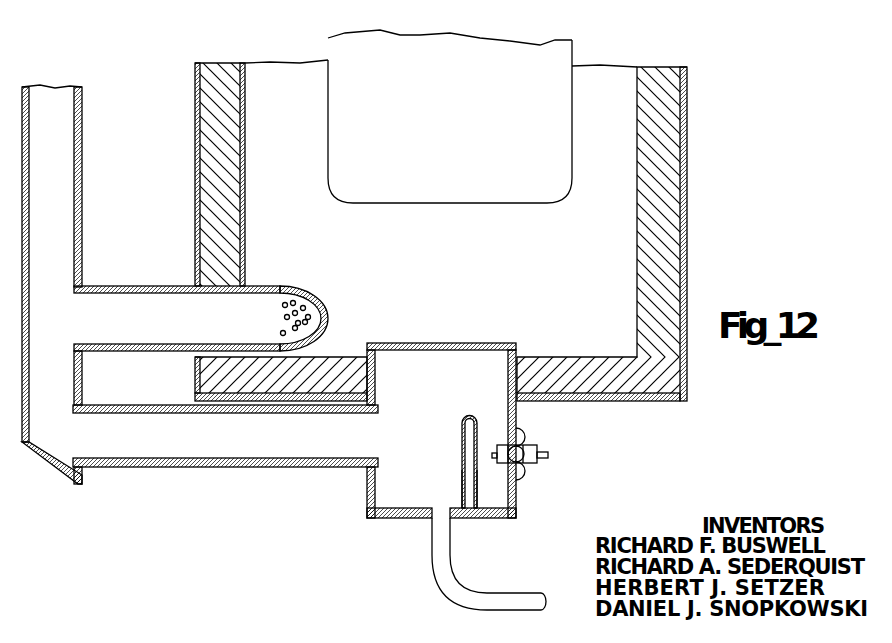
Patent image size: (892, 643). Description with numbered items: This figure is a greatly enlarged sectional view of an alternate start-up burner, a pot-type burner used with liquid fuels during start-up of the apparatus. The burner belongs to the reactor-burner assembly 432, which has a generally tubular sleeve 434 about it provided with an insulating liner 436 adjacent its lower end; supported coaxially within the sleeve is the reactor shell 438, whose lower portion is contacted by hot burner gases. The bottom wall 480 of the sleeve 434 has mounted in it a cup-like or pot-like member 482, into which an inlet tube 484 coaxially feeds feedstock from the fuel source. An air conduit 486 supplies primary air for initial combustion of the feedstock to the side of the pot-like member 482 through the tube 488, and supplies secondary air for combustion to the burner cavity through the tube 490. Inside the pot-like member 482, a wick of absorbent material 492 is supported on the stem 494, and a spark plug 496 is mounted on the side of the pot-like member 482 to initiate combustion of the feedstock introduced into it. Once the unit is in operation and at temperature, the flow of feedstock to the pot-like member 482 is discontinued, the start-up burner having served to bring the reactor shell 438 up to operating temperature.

The reactor-burner assembly 432 is at (492, 204).
The tubular sleeve 434 is at (688, 258).
The insulating liner 436 is at (225, 67).
The reactor shell 438 is at (566, 58).
The bottom wall 480 is at (632, 402).
The pot-like member 482 is at (380, 494).
The inlet tube 484 is at (440, 563).
The air conduit 486 is at (62, 103).
The tube 488 is at (212, 467).
The tube 490 is at (147, 302).
The wick of absorbent material 492 is at (462, 430).
The stem 494 is at (462, 487).
The spark plug 496 is at (527, 460).